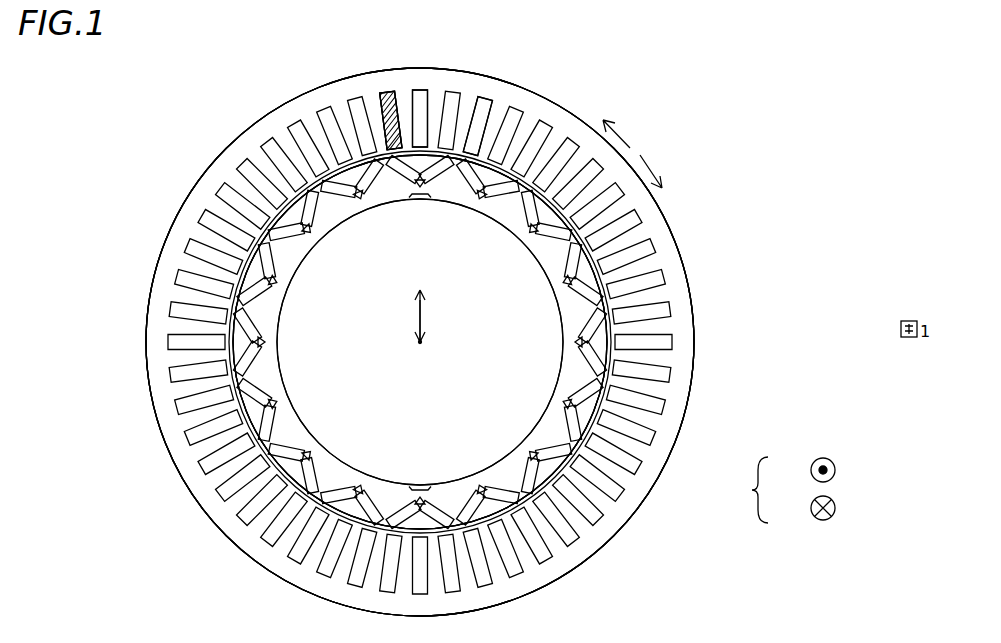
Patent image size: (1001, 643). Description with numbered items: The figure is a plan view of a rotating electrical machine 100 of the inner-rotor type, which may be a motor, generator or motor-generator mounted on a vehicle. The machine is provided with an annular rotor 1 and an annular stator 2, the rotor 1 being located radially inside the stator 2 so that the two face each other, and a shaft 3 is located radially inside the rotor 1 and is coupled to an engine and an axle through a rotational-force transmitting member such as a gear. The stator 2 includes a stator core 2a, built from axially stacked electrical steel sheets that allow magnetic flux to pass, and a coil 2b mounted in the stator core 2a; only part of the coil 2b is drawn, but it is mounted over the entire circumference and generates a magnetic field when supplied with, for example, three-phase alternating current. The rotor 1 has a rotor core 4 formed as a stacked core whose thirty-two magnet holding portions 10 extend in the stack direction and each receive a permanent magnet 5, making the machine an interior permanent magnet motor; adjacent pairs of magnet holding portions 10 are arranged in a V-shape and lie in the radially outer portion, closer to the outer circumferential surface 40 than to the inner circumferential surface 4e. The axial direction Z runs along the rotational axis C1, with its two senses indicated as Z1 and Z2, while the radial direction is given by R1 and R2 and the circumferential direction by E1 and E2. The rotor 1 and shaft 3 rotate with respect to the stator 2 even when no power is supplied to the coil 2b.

The rotating electrical machine 100 is at (156, 65).
The rotor 1 is at (190, 238).
The stator 2 is at (220, 157).
The stator core 2a is at (252, 140).
The coil 2b is at (390, 90).
The shaft 3 is at (530, 327).
The rotor core 4 is at (260, 305).
The outer circumferential surface 40 is at (242, 348).
The inner circumferential surface 4e is at (240, 390).
The permanent magnet 5 is at (383, 133).
The magnet holding portion 10 is at (360, 173).
The rotational axis C1 is at (420, 342).
The radial direction R1 is at (440, 323).
The radial direction R2 is at (440, 314).
The circumferential direction E1 is at (632, 124).
The circumferential direction E2 is at (664, 164).
The axial direction Z is at (751, 490).
The axial direction one side Z1 is at (802, 471).
The axial direction other side Z2 is at (802, 511).